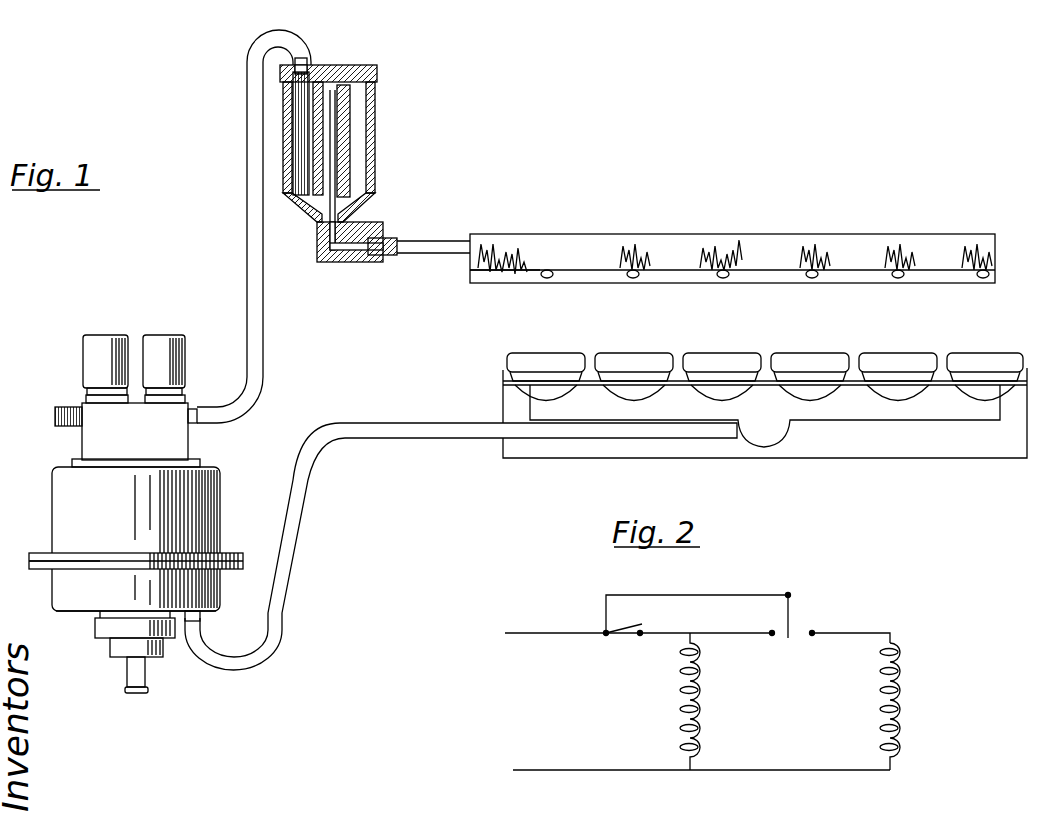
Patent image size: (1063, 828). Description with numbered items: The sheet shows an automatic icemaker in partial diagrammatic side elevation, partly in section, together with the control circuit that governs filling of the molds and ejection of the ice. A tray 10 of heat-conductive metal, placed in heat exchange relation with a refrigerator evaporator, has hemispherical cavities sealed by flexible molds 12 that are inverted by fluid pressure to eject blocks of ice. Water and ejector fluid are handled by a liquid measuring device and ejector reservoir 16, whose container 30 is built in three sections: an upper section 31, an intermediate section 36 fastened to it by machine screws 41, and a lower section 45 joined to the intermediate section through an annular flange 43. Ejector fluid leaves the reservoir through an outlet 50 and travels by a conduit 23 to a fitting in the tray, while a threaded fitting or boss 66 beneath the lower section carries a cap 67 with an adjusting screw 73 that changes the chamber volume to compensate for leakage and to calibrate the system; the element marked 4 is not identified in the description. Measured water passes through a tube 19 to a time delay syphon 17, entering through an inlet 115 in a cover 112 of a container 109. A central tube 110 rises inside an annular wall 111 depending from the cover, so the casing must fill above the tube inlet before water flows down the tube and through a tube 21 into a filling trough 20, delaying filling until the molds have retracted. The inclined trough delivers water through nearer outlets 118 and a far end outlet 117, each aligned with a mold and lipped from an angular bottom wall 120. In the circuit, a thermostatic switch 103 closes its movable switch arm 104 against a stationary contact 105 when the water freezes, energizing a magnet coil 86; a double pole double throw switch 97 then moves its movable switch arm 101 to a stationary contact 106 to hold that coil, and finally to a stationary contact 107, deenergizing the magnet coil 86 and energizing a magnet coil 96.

In FIG. 1, the support plate 4 is at (30, 562).
In FIG. 1, the tray 10 is at (1027, 402).
In FIG. 1, the flexible molds 12 is at (546, 356).
In FIG. 1, the liquid measuring device and ejector reservoir 16 is at (131, 524).
In FIG. 1, the syphon 17 is at (375, 160).
In FIG. 1, the tube 19 is at (246, 290).
In FIG. 1, the filling trough 20 is at (590, 235).
In FIG. 1, the tube 21 is at (426, 244).
In FIG. 1, the conduit 23 is at (283, 606).
In FIG. 1, the container 30 is at (58, 500).
In FIG. 1, the upper section 31 is at (88, 435).
In FIG. 1, the intermediate section 36 is at (222, 526).
In FIG. 1, the machine screws 41 is at (74, 463).
In FIG. 1, the annular flange 43 is at (40, 553).
In FIG. 1, the lower section 45 is at (68, 605).
In FIG. 1, the outlet 50 is at (205, 615).
In FIG. 1, the threaded fitting or boss 66 is at (100, 620).
In FIG. 1, the cap 67 is at (163, 649).
In FIG. 1, the adjusting screw 73 is at (148, 679).
In FIG. 1, the container 109 is at (303, 208).
In FIG. 1, the tube 110 is at (337, 110).
In FIG. 1, the annular wall 111 is at (352, 130).
In FIG. 1, the cover 112 is at (338, 65).
In FIG. 1, the inlet 115 is at (302, 60).
In FIG. 1, the far end outlet 117 is at (981, 279).
In FIG. 1, the outlets 118 is at (545, 279).
In FIG. 1, the angular bottom wall 120 is at (492, 276).
In FIG. 2, the magnet coil 86 is at (683, 688).
In FIG. 2, the magnet coil 96 is at (898, 695).
In FIG. 2, the switch 97 is at (794, 589).
In FIG. 2, the movable switch arm 101 is at (795, 627).
In FIG. 2, the thermostatic switch 103 is at (611, 646).
In FIG. 2, the movable switch arm 104 is at (638, 625).
In FIG. 2, the stationary contact 105 is at (640, 637).
In FIG. 2, the stationary contact 106 is at (772, 637).
In FIG. 2, the stationary contact 107 is at (812, 637).